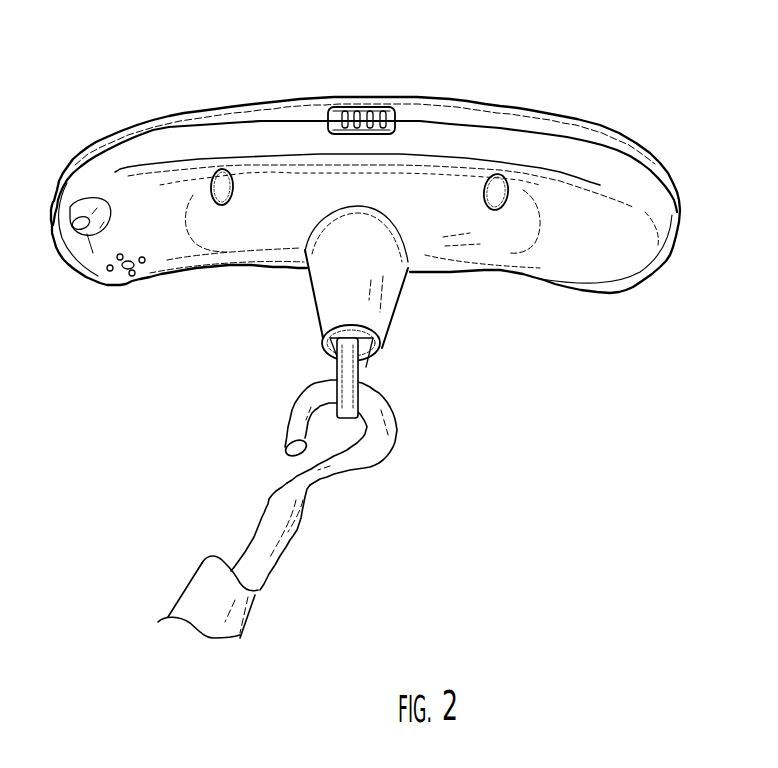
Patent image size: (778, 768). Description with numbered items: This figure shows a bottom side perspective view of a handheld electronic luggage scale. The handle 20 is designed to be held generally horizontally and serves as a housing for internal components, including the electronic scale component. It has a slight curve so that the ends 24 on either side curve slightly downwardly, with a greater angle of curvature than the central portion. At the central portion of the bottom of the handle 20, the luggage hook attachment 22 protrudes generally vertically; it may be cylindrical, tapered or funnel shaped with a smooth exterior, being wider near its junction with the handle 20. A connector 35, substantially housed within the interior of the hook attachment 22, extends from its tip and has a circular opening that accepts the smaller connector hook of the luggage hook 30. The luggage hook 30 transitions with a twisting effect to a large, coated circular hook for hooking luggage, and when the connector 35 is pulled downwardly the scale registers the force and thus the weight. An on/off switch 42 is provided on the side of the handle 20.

The handle 20 is at (510, 107).
The luggage hook attachment 22 is at (383, 293).
The ends of the handle 24 is at (92, 256).
The luggage hook 30 is at (290, 530).
The connector 35 is at (397, 425).
The on/off switch 42 is at (362, 107).